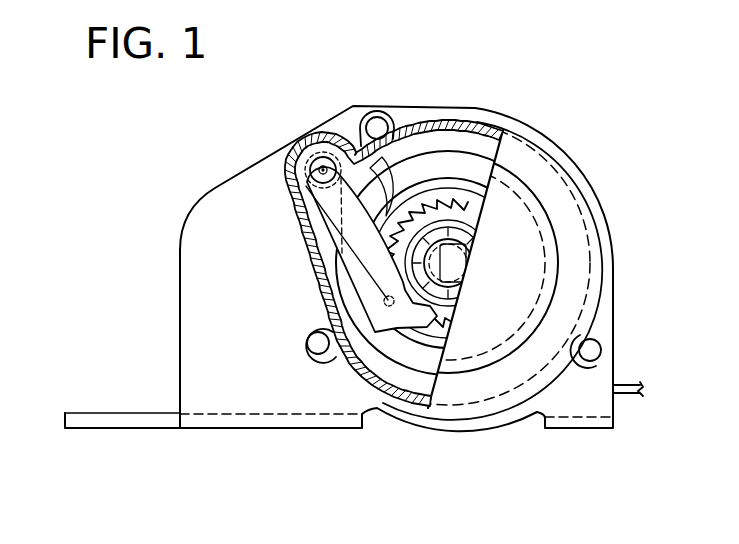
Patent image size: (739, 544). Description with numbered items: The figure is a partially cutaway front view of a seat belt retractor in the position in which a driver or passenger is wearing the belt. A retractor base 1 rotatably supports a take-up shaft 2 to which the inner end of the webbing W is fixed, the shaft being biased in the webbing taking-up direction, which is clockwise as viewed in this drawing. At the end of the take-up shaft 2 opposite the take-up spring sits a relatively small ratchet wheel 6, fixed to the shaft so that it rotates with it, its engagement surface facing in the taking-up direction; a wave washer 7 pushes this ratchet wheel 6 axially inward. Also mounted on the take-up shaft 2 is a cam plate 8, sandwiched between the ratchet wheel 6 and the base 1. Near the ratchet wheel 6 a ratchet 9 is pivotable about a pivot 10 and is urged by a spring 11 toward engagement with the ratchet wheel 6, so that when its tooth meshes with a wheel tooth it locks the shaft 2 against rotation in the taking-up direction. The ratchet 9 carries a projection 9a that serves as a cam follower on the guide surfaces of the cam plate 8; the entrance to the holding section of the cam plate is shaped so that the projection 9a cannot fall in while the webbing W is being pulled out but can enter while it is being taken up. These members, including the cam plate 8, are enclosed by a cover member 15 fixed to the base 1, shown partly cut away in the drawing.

The retractor base 1 is at (256, 398).
The take-up shaft 2 is at (452, 260).
The ratchet wheel 6 is at (445, 342).
The wave washer 7 is at (458, 228).
The cam plate 8 is at (481, 157).
The ratchet 9 is at (325, 203).
The projection 9a is at (385, 301).
The pivot 10 is at (321, 166).
The spring 11 is at (356, 243).
The cover member 15 is at (446, 121).
The webbing W is at (632, 384).